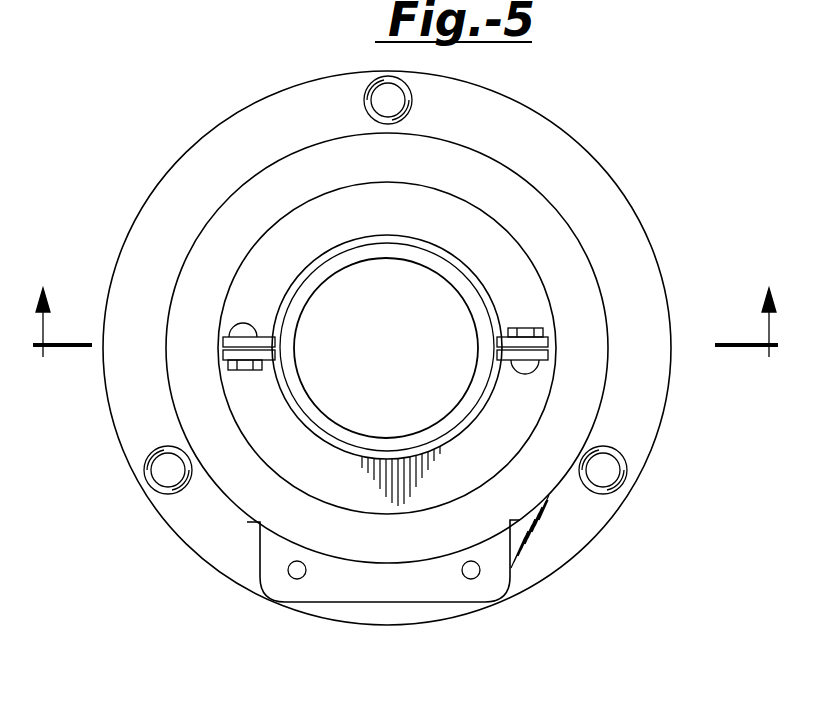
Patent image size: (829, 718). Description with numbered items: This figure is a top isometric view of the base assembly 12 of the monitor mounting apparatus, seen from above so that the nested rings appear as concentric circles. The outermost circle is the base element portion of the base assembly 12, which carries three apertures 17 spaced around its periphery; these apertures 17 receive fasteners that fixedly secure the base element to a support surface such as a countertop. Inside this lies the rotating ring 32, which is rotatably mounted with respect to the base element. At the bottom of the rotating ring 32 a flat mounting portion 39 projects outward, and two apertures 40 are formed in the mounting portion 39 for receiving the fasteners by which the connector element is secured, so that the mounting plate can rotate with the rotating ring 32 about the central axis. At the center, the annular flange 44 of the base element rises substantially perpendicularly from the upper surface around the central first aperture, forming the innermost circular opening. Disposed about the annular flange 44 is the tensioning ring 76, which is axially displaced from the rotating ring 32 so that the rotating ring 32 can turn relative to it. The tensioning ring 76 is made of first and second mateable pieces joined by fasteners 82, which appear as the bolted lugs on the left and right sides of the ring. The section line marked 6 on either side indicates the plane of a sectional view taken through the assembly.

The base assembly 12 is at (632, 193).
The apertures 17 is at (384, 97).
The rotating ring 32 is at (583, 318).
The mounting portion 39 is at (368, 574).
The apertures 40 is at (293, 578).
The annular flange 44 is at (487, 345).
The tensioning ring 76 is at (442, 234).
The fasteners 82 is at (238, 327).
The section line 6- 6 is at (405, 309).